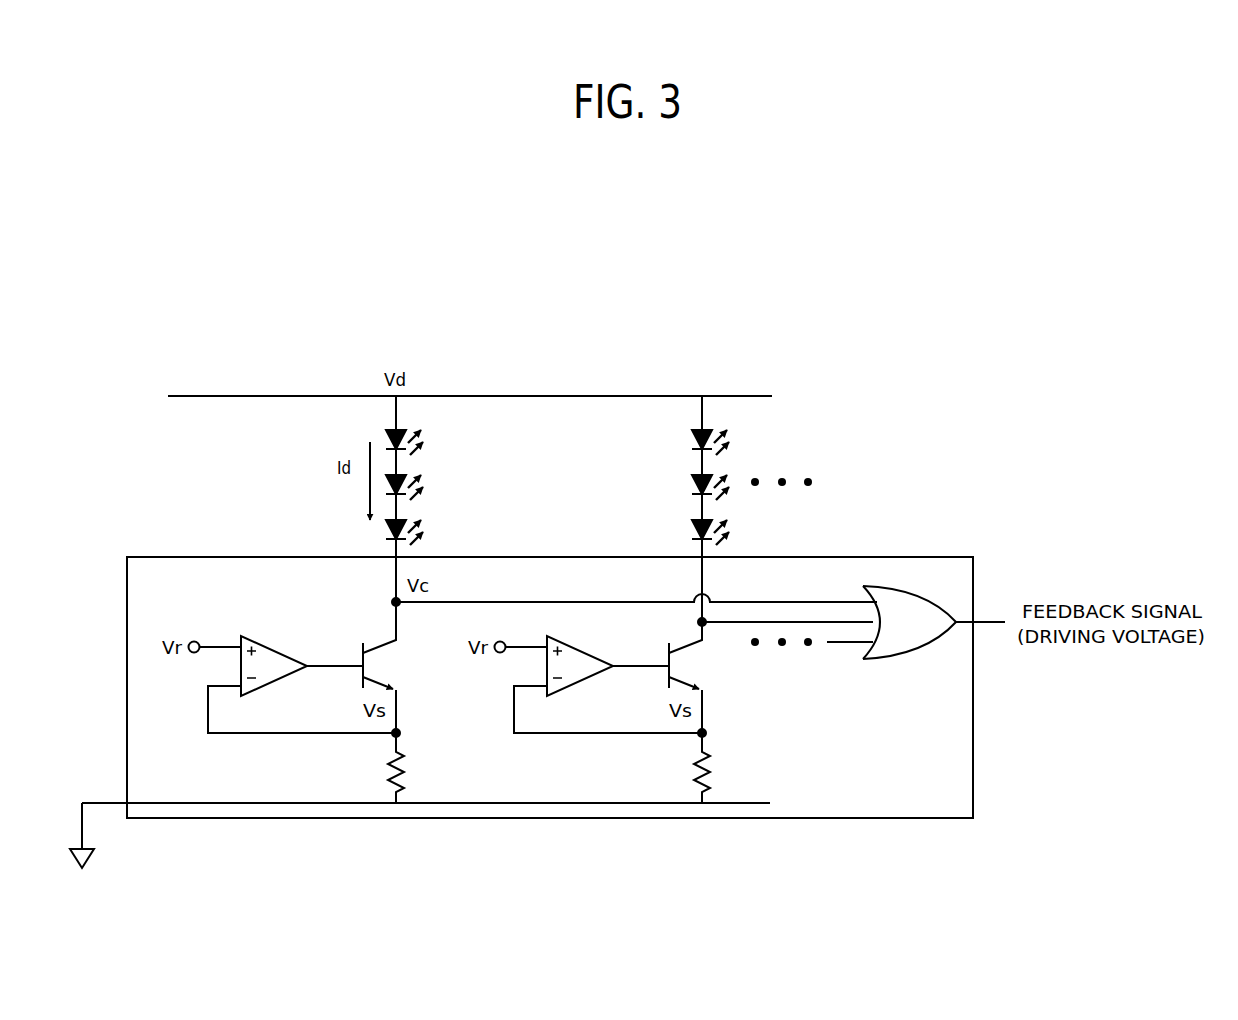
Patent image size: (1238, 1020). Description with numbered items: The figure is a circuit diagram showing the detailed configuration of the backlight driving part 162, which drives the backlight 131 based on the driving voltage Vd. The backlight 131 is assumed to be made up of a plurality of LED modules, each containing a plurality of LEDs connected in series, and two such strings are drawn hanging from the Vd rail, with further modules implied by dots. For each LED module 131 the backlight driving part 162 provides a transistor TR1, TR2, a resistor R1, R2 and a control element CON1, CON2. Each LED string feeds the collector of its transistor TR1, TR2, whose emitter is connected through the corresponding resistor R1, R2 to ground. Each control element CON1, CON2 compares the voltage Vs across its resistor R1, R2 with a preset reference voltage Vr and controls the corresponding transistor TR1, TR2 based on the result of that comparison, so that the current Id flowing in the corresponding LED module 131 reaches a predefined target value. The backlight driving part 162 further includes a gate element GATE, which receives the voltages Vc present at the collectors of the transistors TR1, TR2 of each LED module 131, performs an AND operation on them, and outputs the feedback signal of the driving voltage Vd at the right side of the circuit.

The backlight 131 is at (383, 432).
The backlight driving part 162 is at (950, 535).
The control element CON1 is at (274, 654).
The control element CON2 is at (580, 654).
The transistor TR1 is at (371, 667).
The transistor TR2 is at (677, 667).
The resistor R1 is at (379, 768).
The resistor R2 is at (685, 768).
The gate element GATE is at (909, 637).